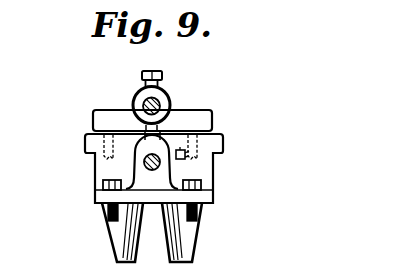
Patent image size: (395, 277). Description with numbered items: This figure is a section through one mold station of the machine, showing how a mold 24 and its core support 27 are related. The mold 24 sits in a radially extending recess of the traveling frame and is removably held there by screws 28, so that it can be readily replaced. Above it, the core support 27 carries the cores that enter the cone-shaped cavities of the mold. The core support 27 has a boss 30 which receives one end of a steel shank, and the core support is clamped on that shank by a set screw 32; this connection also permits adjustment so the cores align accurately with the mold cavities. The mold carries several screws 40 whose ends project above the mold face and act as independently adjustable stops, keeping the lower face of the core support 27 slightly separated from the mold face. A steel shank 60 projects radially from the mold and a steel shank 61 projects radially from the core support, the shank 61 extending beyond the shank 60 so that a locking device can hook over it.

The mold 24 is at (206, 172).
The core support 27 is at (94, 115).
The screws 28 is at (182, 186).
The boss 30 is at (133, 100).
The set screw 32 is at (160, 72).
The screws 40 is at (91, 153).
The steel shank 60 is at (142, 163).
The steel shank 61 is at (160, 100).